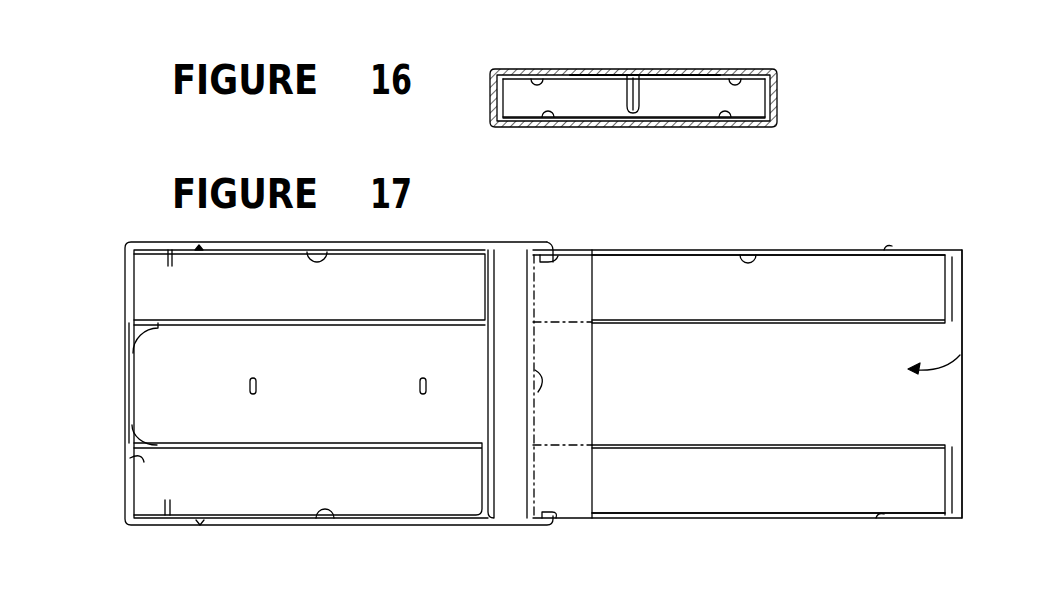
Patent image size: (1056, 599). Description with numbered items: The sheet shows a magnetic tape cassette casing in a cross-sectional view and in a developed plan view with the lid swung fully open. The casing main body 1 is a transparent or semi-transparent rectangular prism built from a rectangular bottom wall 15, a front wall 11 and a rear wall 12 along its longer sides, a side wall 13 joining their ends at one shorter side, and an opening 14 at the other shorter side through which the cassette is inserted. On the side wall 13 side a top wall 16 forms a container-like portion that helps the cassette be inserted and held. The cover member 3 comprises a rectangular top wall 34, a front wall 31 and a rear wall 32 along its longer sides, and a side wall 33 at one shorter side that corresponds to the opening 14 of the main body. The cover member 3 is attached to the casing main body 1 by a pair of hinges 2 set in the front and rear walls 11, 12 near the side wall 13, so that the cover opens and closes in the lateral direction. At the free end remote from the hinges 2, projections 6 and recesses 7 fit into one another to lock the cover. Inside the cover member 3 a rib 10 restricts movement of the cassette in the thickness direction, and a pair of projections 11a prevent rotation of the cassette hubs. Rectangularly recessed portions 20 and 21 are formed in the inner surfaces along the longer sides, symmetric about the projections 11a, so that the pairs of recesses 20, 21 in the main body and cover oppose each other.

In FIG. 16, the casing main body 1 is at (625, 150).
In FIG. 17, the casing main body 1 is at (980, 252).
In FIG. 17, the hinge means 2 is at (560, 250).
In FIG. 16, the cover member 3 is at (779, 60).
In FIG. 17, the cover member 3 is at (100, 212).
In FIG. 17, the projections 6 is at (890, 246).
In FIG. 17, the recesses 7 is at (204, 244).
In FIG. 17, the rib 10 is at (175, 500).
In FIG. 16, the front wall 11 is at (500, 126).
In FIG. 17, the front wall 11 is at (740, 520).
In FIG. 16, the projections for preventing rotation of hubs 11a is at (643, 86).
In FIG. 17, the projections for preventing rotation of hubs 11a is at (250, 380).
In FIG. 16, the rear wall 12 is at (765, 125).
In FIG. 17, the rear wall 12 is at (125, 400).
In FIG. 17, the side wall 13 is at (536, 396).
In FIG. 17, the opening 14 is at (962, 350).
In FIG. 16, the bottom wall 15 is at (672, 128).
In FIG. 17, the bottom wall 15 is at (918, 402).
In FIG. 17, the top wall 16 is at (578, 408).
In FIG. 16, the rectangularly recessed portions 20 is at (537, 78).
In FIG. 17, the rectangularly recessed portions 20 is at (132, 353).
In FIG. 16, the rectangularly recessed portions 21 is at (548, 118).
In FIG. 17, the rectangularly recessed portions 21 is at (952, 292).
In FIG. 16, the front wall of cover member 31 is at (492, 99).
In FIG. 17, the front wall of cover member 31 is at (318, 525).
In FIG. 16, the rear wall of cover member 32 is at (778, 98).
In FIG. 17, the rear wall of cover member 32 is at (316, 252).
In FIG. 17, the side wall of cover member 33 is at (130, 466).
In FIG. 16, the top wall of cover member 34 is at (602, 72).
In FIG. 17, the top wall of cover member 34 is at (268, 338).